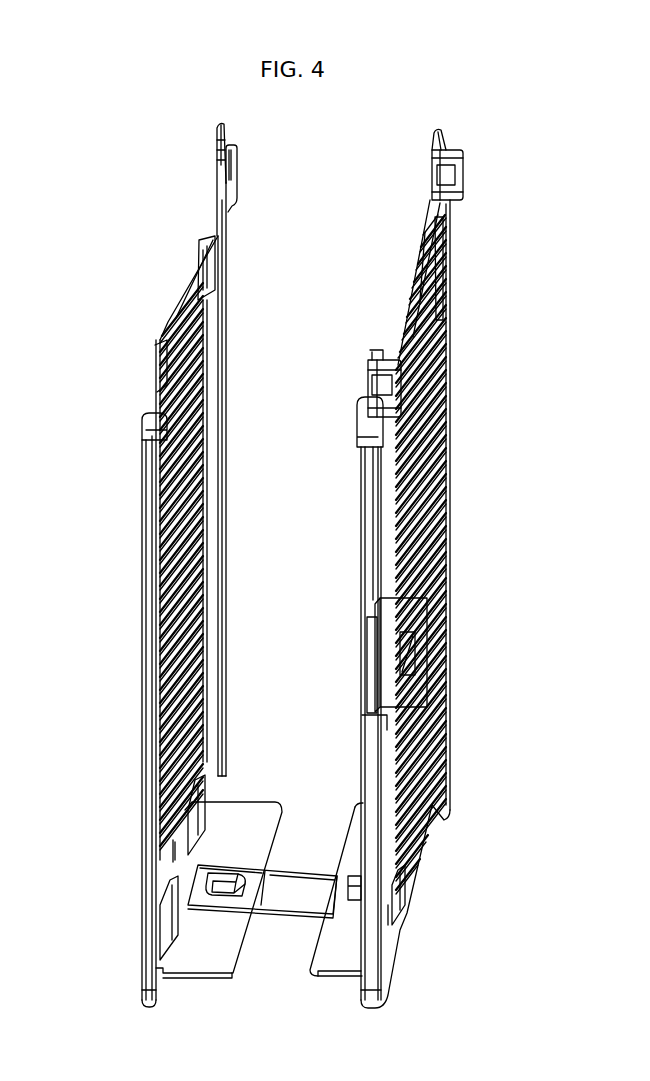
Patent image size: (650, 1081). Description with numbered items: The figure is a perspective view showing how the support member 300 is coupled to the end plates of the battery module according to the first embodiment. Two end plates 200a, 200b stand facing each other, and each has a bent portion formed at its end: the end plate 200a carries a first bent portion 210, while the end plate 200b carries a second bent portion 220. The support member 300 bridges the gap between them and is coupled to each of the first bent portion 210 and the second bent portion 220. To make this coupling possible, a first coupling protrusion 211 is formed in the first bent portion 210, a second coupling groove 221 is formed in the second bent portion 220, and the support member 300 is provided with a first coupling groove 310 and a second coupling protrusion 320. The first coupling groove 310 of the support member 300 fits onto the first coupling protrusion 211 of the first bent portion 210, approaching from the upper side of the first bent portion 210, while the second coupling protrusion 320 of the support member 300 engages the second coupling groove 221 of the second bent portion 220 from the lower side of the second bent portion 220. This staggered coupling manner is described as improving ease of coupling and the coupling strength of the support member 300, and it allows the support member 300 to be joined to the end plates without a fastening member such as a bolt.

The end plate 200a is at (145, 570).
The end plate 200b is at (428, 532).
The first bent portion 210 is at (210, 967).
The first coupling protrusion 211 is at (225, 886).
The second bent portion 220 is at (333, 970).
The second coupling groove 221 is at (358, 877).
The support member 300 is at (318, 792).
The first coupling groove 310 is at (245, 873).
The second coupling protrusion 320 is at (337, 884).